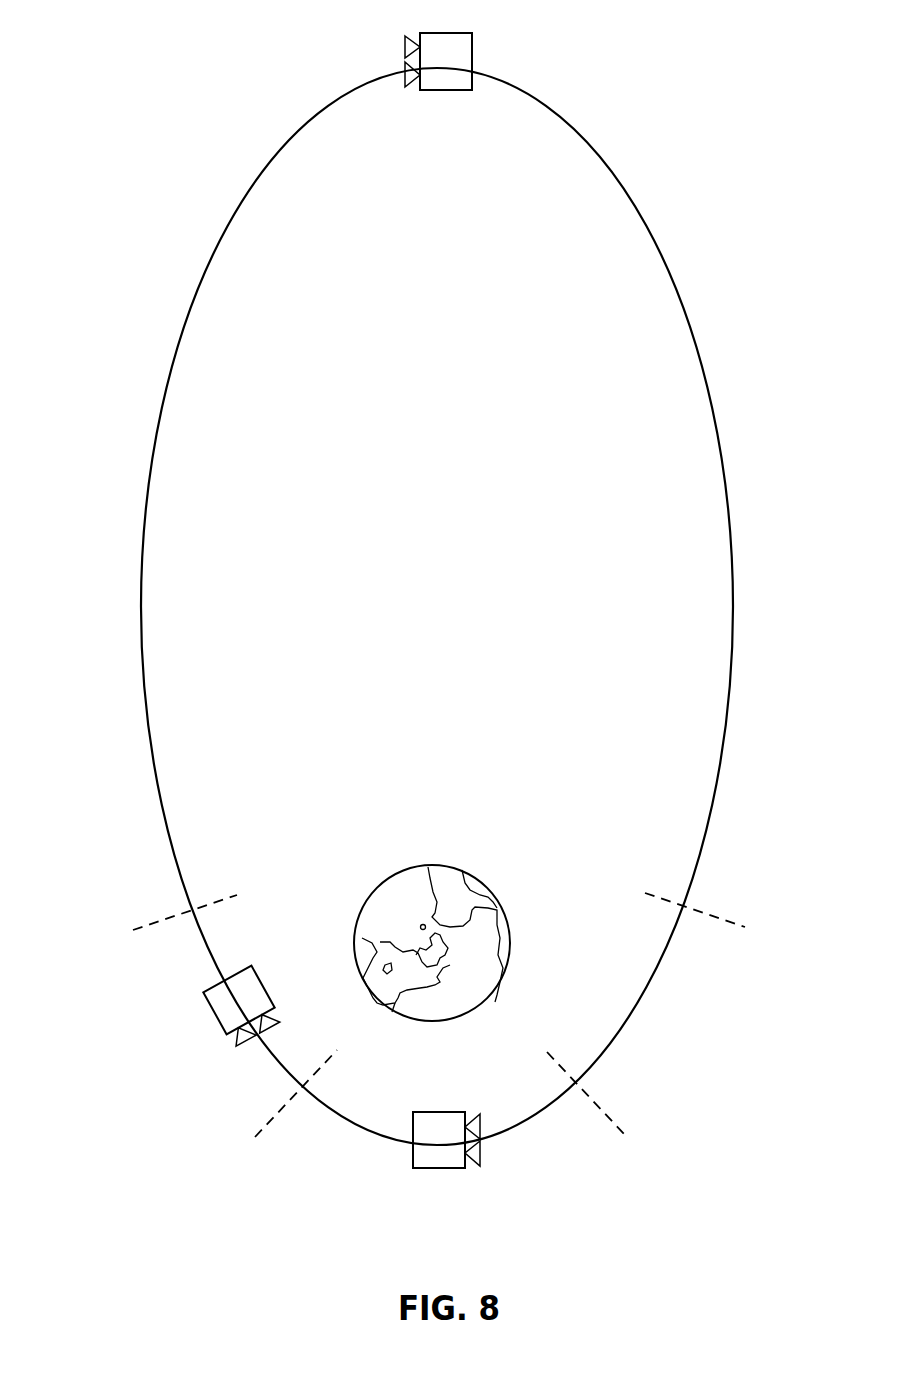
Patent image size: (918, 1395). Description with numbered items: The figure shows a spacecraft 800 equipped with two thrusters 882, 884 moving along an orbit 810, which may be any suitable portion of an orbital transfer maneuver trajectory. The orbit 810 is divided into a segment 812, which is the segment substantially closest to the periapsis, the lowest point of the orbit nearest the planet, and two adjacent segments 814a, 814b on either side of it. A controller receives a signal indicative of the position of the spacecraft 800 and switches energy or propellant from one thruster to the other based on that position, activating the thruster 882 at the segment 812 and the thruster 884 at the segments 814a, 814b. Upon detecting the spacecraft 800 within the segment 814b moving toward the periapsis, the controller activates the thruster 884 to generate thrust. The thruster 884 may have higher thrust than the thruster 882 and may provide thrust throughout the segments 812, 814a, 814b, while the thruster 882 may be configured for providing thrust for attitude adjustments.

The spacecraft 800 is at (413, 1158).
The orbit 810 is at (143, 633).
The segment 812 is at (343, 1118).
The segment 814a is at (207, 940).
The segment 814b is at (647, 987).
The thruster 882 is at (481, 1124).
The thruster 884 is at (482, 1150).